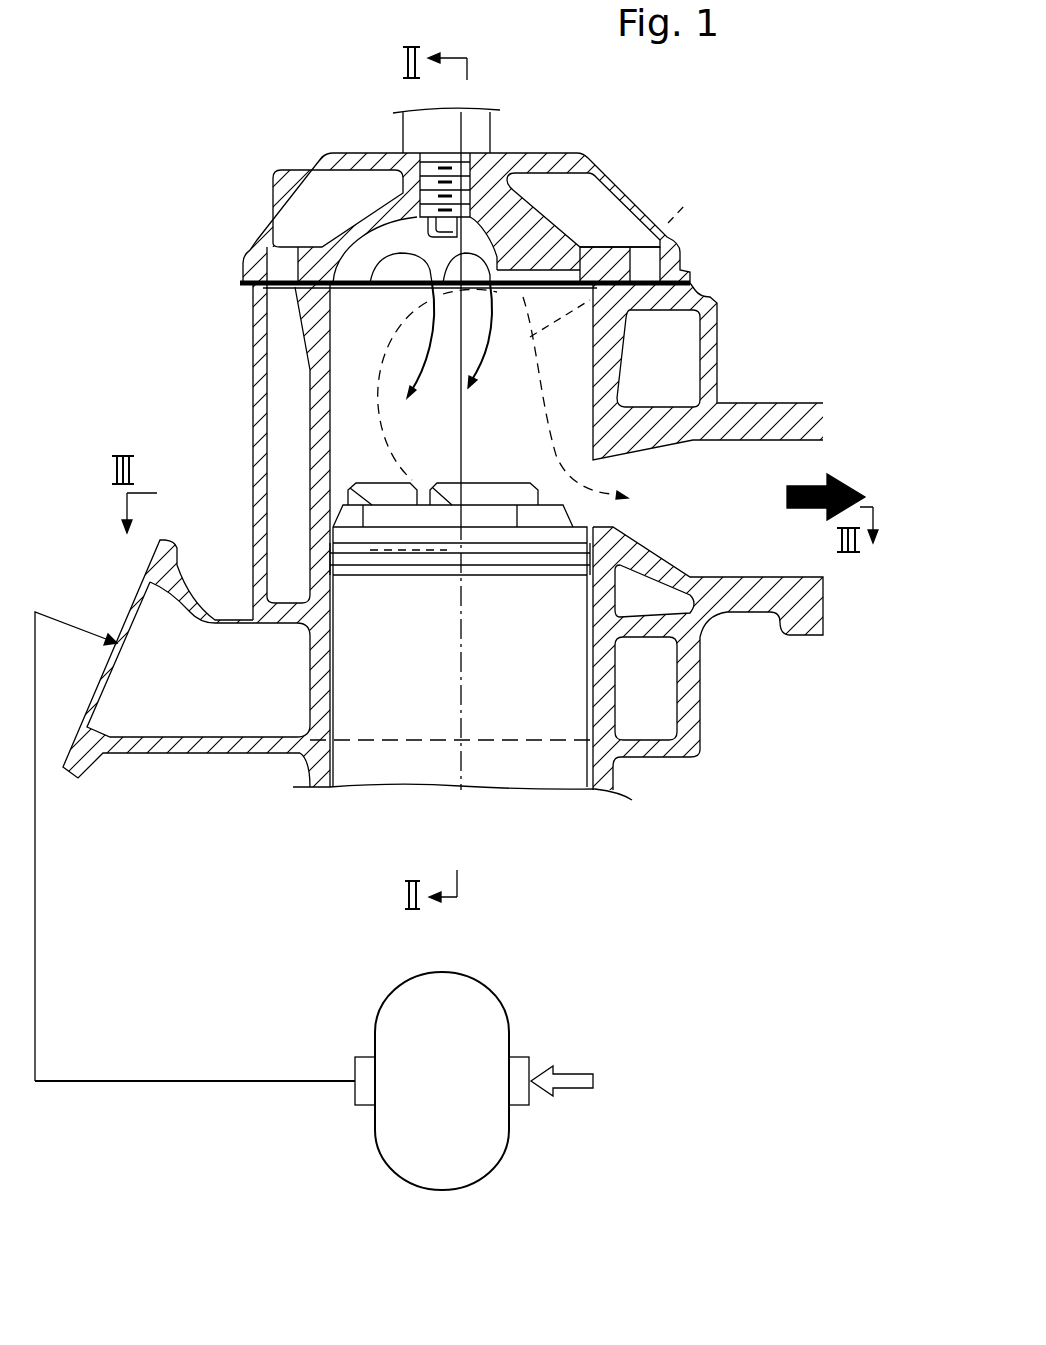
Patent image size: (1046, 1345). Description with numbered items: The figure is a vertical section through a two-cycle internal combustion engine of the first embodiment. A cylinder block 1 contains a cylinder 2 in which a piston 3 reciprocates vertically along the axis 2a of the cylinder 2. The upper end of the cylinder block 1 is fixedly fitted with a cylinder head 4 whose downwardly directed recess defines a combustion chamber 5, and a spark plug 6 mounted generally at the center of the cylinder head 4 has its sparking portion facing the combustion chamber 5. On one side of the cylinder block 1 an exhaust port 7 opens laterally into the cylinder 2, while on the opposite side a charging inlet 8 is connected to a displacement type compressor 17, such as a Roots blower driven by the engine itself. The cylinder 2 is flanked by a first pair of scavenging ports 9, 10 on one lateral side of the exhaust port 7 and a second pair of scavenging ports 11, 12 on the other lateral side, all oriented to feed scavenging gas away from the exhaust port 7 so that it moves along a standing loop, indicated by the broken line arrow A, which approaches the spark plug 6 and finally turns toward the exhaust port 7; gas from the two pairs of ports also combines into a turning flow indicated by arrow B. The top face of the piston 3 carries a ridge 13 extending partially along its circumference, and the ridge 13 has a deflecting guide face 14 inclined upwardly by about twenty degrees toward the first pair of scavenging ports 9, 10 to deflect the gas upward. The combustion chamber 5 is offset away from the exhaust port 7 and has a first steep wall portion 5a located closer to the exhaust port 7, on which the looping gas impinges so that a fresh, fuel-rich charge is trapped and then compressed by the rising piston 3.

The cylinder block 1 is at (238, 425).
The cylinder 2 is at (345, 400).
The axis of the cylinder 2a is at (460, 713).
The piston 3 is at (384, 715).
The cylinder head 4 is at (634, 177).
The combustion chamber 5 is at (397, 247).
The first steep wall portion 5a is at (580, 235).
The spark plug 6 is at (467, 185).
The exhaust port 7 is at (743, 487).
The charging inlet 8 is at (172, 700).
The scavenging port 9 is at (510, 483).
The scavenging port 10 is at (383, 495).
The scavenging port 11 is at (623, 406).
The scavenging port 12 is at (299, 485).
The ridge 13 is at (523, 517).
The deflecting guide face 14 is at (450, 517).
The displacement type compressor 17 is at (520, 1019).
The broken line arrow A is at (535, 357).
The arrow B is at (417, 262).